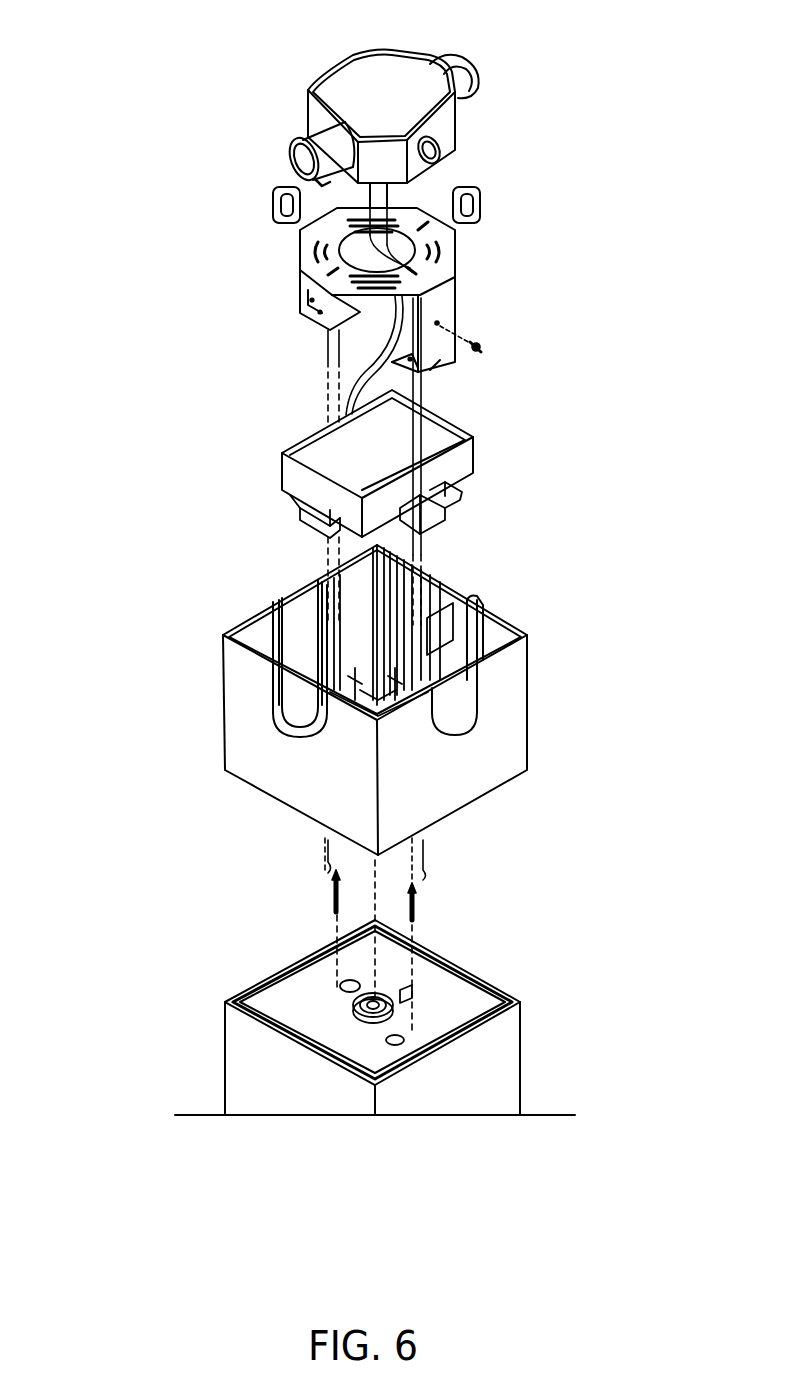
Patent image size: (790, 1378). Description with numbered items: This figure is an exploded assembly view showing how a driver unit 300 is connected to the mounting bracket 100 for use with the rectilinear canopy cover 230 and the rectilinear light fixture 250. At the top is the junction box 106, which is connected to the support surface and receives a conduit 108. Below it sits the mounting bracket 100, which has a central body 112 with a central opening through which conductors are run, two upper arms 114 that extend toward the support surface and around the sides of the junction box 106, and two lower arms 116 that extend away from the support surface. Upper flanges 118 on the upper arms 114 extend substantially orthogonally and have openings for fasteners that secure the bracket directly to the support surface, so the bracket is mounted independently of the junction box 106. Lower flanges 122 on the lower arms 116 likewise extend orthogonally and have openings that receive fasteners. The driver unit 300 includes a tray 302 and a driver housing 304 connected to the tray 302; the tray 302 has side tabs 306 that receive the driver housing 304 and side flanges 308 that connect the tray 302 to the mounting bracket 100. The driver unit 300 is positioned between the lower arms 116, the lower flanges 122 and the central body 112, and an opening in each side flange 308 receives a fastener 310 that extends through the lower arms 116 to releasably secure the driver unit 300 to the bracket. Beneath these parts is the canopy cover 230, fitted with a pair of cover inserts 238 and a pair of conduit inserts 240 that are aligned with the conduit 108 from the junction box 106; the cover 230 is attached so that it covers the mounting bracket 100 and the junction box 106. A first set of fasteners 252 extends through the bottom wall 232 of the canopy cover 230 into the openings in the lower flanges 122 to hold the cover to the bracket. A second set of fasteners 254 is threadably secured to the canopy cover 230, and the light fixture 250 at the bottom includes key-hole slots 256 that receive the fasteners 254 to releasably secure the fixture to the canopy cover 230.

The mounting bracket 100 is at (512, 224).
The junction box 106 is at (312, 82).
The conduit 108 is at (462, 67).
The central body 112 is at (440, 195).
The upper arm 114 is at (298, 244).
The lower arm 116 is at (456, 288).
The upper flange 118 is at (276, 195).
The lower flange 122 is at (430, 372).
The rectilinear canopy cover 230 is at (372, 700).
The bottom wall 232 is at (250, 786).
The cover insert 238 is at (470, 700).
The conduit insert 240 is at (275, 685).
The rectilinear light fixture 250 is at (409, 1055).
The first set of fasteners 252 is at (325, 852).
The second set of fasteners 254 is at (414, 916).
The key-hole slot 256 is at (410, 1040).
The driver unit 300 is at (360, 445).
The tray 302 is at (300, 508).
The driver housing 304 is at (282, 455).
The side tab 306 is at (458, 483).
The side flange 308 is at (445, 507).
The fastener 310 is at (482, 345).